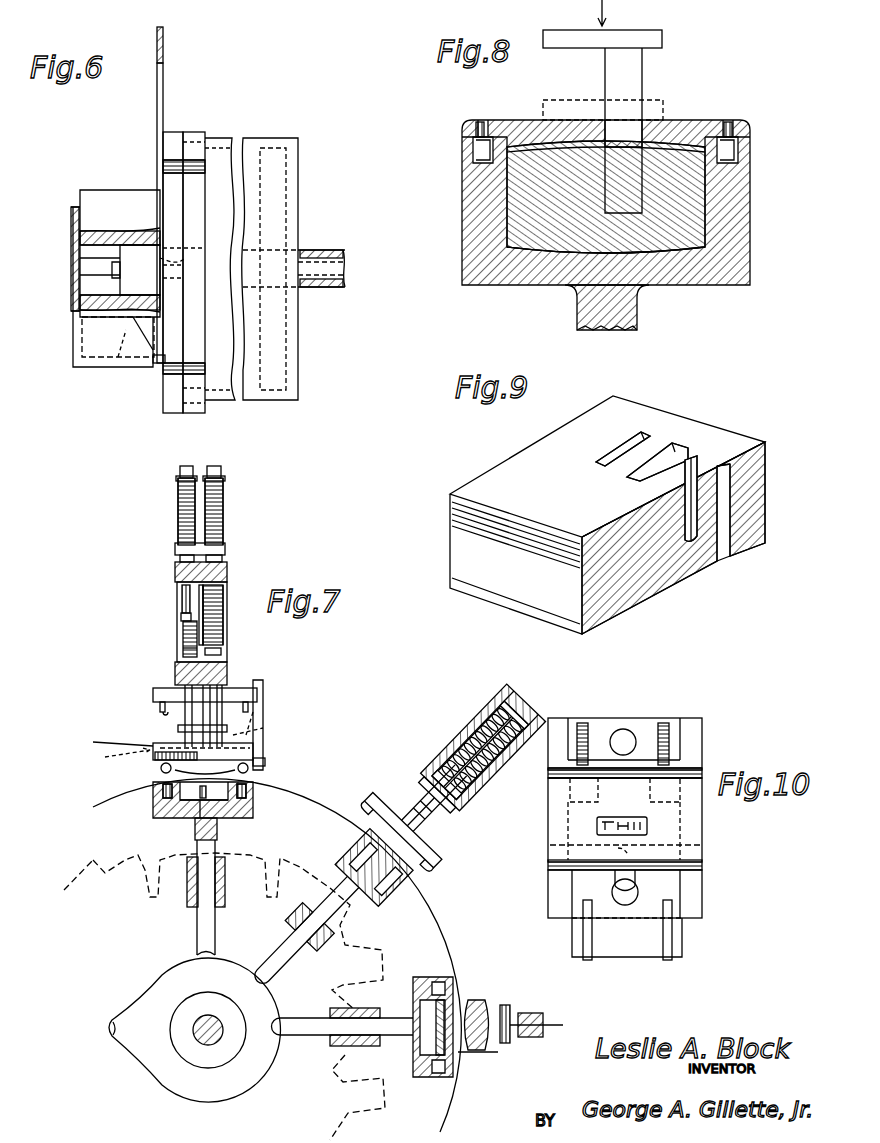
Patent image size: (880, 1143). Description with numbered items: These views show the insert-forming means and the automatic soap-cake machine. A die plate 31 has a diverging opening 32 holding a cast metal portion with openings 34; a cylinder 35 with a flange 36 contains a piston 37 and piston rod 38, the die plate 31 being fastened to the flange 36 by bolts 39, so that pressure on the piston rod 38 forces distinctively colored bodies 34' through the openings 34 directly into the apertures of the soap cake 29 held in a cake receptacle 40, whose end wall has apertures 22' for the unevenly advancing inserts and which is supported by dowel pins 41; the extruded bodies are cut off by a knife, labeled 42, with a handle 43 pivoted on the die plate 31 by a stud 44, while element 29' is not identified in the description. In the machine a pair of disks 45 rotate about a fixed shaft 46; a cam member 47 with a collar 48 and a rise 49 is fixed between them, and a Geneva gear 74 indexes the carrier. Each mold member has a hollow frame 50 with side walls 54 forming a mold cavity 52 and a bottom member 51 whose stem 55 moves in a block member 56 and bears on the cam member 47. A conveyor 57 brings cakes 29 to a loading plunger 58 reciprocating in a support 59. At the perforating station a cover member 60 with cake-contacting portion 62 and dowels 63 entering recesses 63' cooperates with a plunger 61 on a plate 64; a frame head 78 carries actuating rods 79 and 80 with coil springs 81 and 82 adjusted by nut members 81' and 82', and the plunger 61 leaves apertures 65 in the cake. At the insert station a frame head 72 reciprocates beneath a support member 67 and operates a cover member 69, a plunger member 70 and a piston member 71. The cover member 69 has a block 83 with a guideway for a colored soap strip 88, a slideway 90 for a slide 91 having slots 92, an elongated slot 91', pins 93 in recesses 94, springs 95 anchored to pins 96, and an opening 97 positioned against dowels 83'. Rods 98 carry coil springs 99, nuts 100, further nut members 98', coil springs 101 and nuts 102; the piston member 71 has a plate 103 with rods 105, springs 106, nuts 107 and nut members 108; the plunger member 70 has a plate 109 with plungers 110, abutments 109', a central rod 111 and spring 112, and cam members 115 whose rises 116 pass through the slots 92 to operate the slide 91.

In FIG. 6, the apertures 22' is at (55, 259).
In FIG. 6, the soap cake 29 is at (97, 240).
In FIG. 8, the soap cake 29 is at (559, 197).
In FIG. 9, the soap cake 29 is at (607, 515).
In FIG. 7, the soap cake 29 is at (470, 1006).
In FIG. 6, the die plunger 29' is at (95, 270).
In FIG. 6, the die plate 31 is at (168, 132).
In FIG. 6, the diverging opening 32 is at (160, 186).
In FIG. 6, the openings 34 is at (191, 260).
In FIG. 6, the distinctively formed and colored bodies 34' is at (120, 232).
In FIG. 6, the cylinder 35 is at (217, 148).
In FIG. 6, the flange 36 is at (192, 132).
In FIG. 6, the piston 37 is at (273, 150).
In FIG. 6, the piston rod 38 is at (312, 287).
In FIG. 6, the bolts 39 is at (170, 396).
In FIG. 6, the cake receptacle 40 is at (80, 360).
In FIG. 6, the dowel pins 41 is at (153, 363).
In FIG. 6, the arm 42 is at (157, 101).
In FIG. 6, the handle 43 is at (163, 37).
In FIG. 6, the stud 44 is at (118, 357).
In FIG. 7, the disks 45 is at (310, 810).
In FIG. 7, the fixed shaft 46 is at (196, 1035).
In FIG. 7, the cam member 47 is at (182, 962).
In FIG. 7, the collar 48 is at (200, 1058).
In FIG. 7, the rise 49 is at (114, 1022).
In FIG. 7, the hollow frame 50 is at (253, 813).
In FIG. 8, the bottom member 51 is at (526, 275).
In FIG. 7, the bottom member 51 is at (195, 822).
In FIG. 7, the mold cavity 52 is at (153, 804).
In FIG. 7, the side walls 54 is at (153, 818).
In FIG. 8, the stem 55 is at (632, 320).
In FIG. 7, the stem 55 is at (190, 898).
In FIG. 7, the block member 56 is at (222, 882).
In FIG. 7, the conveyor 57 is at (486, 1053).
In FIG. 7, the loading plunger 58 is at (506, 1004).
In FIG. 7, the support 59 is at (535, 1013).
In FIG. 8, the cover member 60 is at (678, 118).
In FIG. 7, the cover member 60 is at (392, 812).
In FIG. 8, the plunger 61 is at (605, 70).
In FIG. 7, the plunger 61 is at (425, 836).
In FIG. 8, the cake contacting portion 62 is at (510, 162).
In FIG. 7, the cake contacting portion 62 is at (378, 825).
In FIG. 8, the dowels 63 is at (574, 139).
In FIG. 7, the dowels 63 is at (426, 878).
In FIG. 7, the recesses 63' is at (326, 917).
In FIG. 8, the plate 64 is at (566, 32).
In FIG. 7, the plate 64 is at (440, 818).
In FIG. 9, the apertures 65 is at (678, 585).
In FIG. 7, the apertures 65 is at (216, 842).
In FIG. 7, the support member 67 is at (175, 548).
In FIG. 7, the cover member 69 is at (105, 758).
In FIG. 7, the plunger member 70 is at (264, 682).
In FIG. 7, the piston member 71 is at (275, 730).
In FIG. 7, the frame head 72 is at (175, 570).
In FIG. 7, the Geneva gear 74 is at (95, 878).
In FIG. 7, the frame head 78 is at (500, 700).
In FIG. 7, the actuating rods 79 is at (478, 724).
In FIG. 7, the actuating rod 80 is at (495, 752).
In FIG. 7, the coil springs 81 is at (430, 755).
In FIG. 7, the nut members 81' is at (419, 773).
In FIG. 7, the coil spring 82 is at (486, 756).
In FIG. 7, the nut member 82' is at (499, 757).
In FIG. 7, the block 83 is at (217, 741).
In FIG. 10, the block 83 is at (634, 889).
In FIG. 7, the dowels 83' is at (189, 784).
In FIG. 10, the dowels 83' is at (636, 797).
In FIG. 7, the strip 88 is at (100, 741).
In FIG. 10, the slideway 90 is at (680, 768).
In FIG. 7, the slide 91 is at (230, 780).
In FIG. 10, the slide 91 is at (647, 894).
In FIG. 10, the elongated slot 91' is at (601, 883).
In FIG. 10, the slots 92 is at (665, 920).
In FIG. 10, the pins 93 is at (645, 782).
In FIG. 10, the recesses 94 is at (680, 740).
In FIG. 10, the springs 95 is at (590, 735).
In FIG. 10, the pins 96 is at (580, 723).
In FIG. 10, the opening 97 is at (648, 826).
In FIG. 7, the actuating rods 98 is at (159, 511).
In FIG. 7, the nut 98' is at (216, 556).
In FIG. 7, the coil springs 99 is at (223, 508).
In FIG. 7, the nuts 100 is at (176, 478).
In FIG. 7, the coil springs 101 is at (183, 636).
In FIG. 7, the nut 102 is at (181, 616).
In FIG. 7, the plate 103 is at (178, 729).
In FIG. 7, the actuating rods 105 is at (205, 640).
In FIG. 7, the coil spring 106 is at (223, 620).
In FIG. 7, the nut 107 is at (221, 652).
In FIG. 7, the nut member 108 is at (225, 670).
In FIG. 7, the plate 109 is at (192, 702).
In FIG. 7, the abutments 109' is at (170, 694).
In FIG. 7, the plungers 110 is at (162, 712).
In FIG. 10, the plungers 110 is at (598, 826).
In FIG. 7, the actuating rod 111 is at (183, 650).
In FIG. 7, the coil spring 112 is at (182, 592).
In FIG. 7, the cam members 115 is at (258, 712).
In FIG. 10, the cam members 115 is at (682, 946).
In FIG. 7, the rise 116 is at (265, 759).